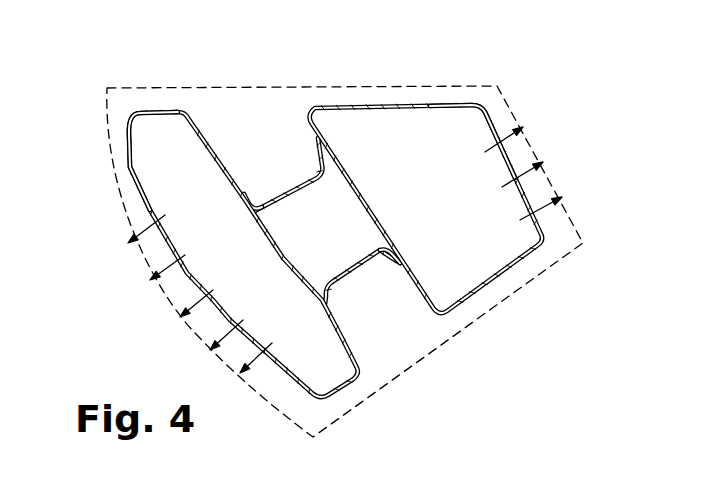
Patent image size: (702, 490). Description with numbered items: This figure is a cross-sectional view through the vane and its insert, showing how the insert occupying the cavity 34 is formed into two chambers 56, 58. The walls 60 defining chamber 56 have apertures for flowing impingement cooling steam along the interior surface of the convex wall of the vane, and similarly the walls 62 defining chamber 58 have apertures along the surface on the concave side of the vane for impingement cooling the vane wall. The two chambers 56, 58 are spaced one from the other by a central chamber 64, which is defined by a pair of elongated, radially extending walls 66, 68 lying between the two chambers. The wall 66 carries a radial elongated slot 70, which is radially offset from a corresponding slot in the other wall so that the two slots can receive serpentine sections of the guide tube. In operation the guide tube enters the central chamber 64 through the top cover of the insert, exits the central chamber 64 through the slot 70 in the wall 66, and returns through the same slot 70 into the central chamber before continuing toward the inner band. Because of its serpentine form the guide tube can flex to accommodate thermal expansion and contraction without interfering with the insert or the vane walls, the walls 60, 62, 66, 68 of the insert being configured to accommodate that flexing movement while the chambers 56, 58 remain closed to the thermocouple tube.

The cavity 34 is at (192, 90).
The chamber 56 is at (162, 182).
The chamber 58 is at (373, 127).
The walls 60 is at (127, 151).
The walls 62 is at (482, 117).
The central chamber 64 is at (315, 242).
The elongated radially extending wall 66 is at (262, 205).
The elongated radially extending wall 68 is at (383, 253).
The radial elongated slot 70 is at (302, 183).